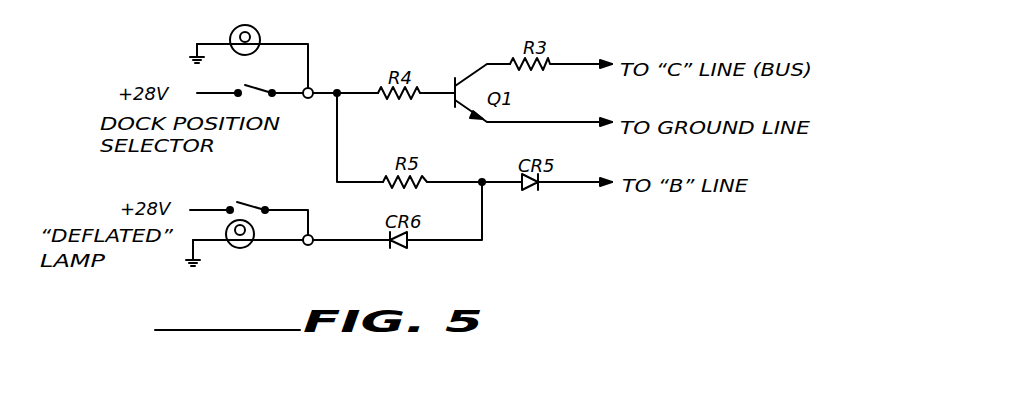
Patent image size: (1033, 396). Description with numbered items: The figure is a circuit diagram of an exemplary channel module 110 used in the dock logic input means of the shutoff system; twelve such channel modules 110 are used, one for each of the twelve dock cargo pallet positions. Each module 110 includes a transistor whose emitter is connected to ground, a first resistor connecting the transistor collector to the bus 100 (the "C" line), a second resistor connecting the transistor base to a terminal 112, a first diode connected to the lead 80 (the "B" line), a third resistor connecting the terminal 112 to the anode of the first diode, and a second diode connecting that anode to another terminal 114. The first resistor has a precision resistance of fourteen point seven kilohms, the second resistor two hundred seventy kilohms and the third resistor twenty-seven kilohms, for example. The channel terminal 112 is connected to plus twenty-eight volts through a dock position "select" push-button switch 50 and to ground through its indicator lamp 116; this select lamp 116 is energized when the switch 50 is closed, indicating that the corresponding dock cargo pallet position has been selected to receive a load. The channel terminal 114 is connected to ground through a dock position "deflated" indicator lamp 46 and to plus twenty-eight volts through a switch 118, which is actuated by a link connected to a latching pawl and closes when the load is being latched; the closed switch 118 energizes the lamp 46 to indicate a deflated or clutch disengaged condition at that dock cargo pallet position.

The indicator lamp 116 is at (230, 32).
The dock position select push-button switch 50 is at (245, 85).
The terminal 112 is at (314, 85).
The switch 118 is at (246, 200).
The deflated indicator lamp 46 is at (245, 248).
The terminal 114 is at (311, 245).
The bus 100 is at (587, 62).
The lead 80 is at (576, 184).
The channel module 110 is at (568, 245).